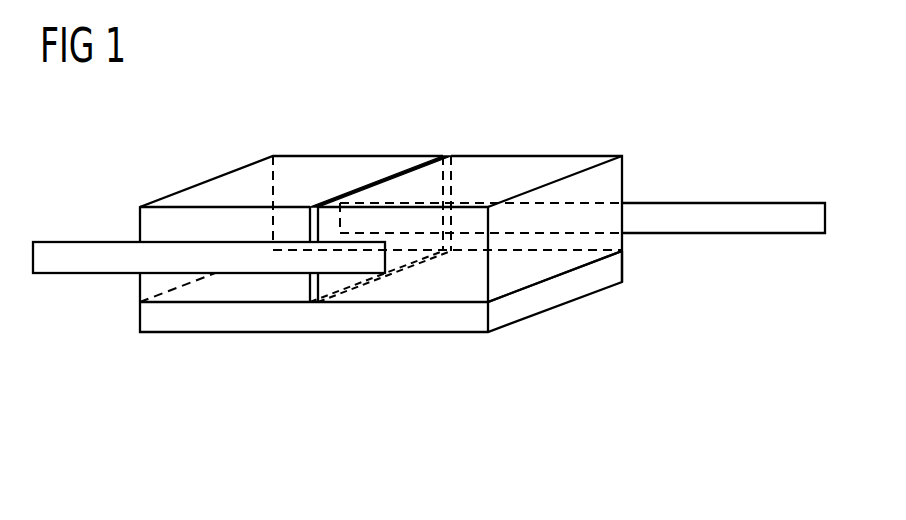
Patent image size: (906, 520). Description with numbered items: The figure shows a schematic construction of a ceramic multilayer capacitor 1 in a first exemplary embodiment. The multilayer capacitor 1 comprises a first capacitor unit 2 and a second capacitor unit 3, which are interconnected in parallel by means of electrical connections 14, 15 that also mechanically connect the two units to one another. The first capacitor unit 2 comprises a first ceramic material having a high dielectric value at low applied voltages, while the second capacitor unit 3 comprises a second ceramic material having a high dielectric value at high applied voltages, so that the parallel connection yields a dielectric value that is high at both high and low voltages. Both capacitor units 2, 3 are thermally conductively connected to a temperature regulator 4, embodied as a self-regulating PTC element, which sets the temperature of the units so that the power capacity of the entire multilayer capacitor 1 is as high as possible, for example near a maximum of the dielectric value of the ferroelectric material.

The multilayer capacitor 1 is at (548, 122).
The first capacitor unit 2 is at (325, 166).
The second capacitor unit 3 is at (502, 166).
The temperature regulator 4 is at (305, 322).
The electrical connection 14 is at (70, 252).
The electrical connection 15 is at (711, 216).